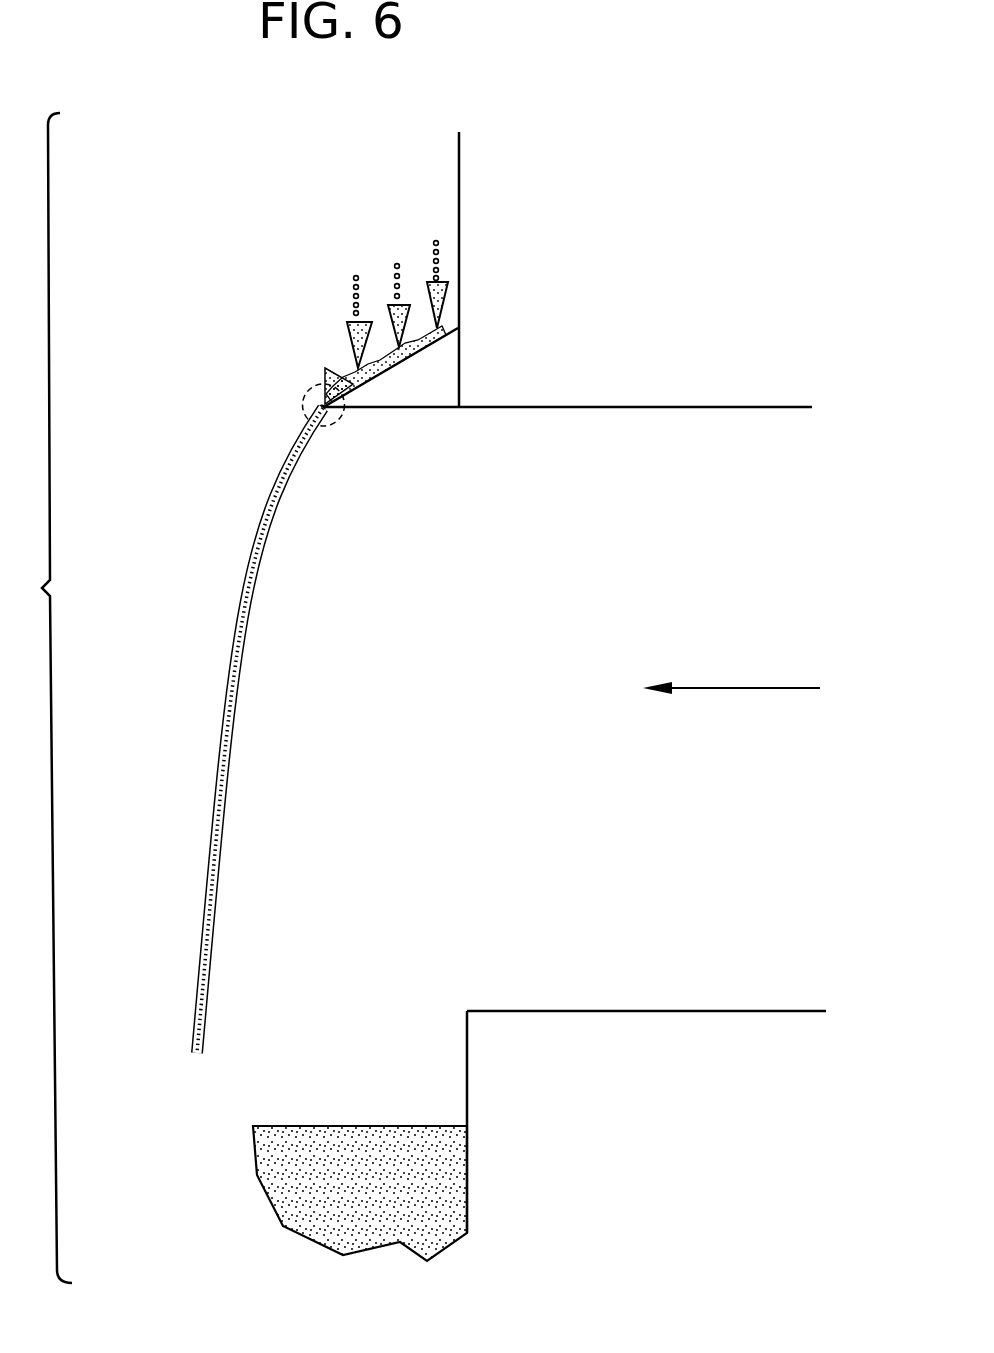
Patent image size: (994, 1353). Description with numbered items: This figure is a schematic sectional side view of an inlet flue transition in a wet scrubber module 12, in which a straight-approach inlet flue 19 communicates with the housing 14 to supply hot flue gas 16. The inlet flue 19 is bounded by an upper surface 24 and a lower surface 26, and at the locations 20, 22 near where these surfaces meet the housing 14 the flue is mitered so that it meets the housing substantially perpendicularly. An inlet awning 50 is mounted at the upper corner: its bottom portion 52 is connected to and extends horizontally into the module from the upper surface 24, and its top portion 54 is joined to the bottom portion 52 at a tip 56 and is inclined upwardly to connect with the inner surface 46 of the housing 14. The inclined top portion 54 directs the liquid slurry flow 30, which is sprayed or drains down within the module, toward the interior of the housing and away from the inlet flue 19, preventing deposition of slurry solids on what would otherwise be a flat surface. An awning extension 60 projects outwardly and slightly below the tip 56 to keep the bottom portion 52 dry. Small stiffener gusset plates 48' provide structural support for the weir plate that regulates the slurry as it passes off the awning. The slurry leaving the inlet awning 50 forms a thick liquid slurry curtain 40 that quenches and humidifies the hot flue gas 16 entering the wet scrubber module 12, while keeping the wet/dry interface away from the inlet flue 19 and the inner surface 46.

The wet scrubber module 12 is at (143, 558).
The housing 14 is at (410, 696).
The flue gas 16 is at (740, 690).
The inlet flue 19 is at (665, 977).
The location 20 is at (482, 384).
The location 22 is at (480, 1022).
The upper surface 24 is at (696, 407).
The lower surface 26 is at (693, 1012).
The liquid slurry flow 30 is at (435, 238).
The liquid slurry curtain 40 is at (226, 712).
The inner surface 46 is at (458, 200).
The stiffener gusset plates 48' is at (305, 368).
The inlet awning 50 is at (442, 395).
The bottom portion 52 is at (443, 407).
The top portion 54 is at (348, 378).
The tip 56 is at (323, 427).
The awning extension 60 is at (318, 405).